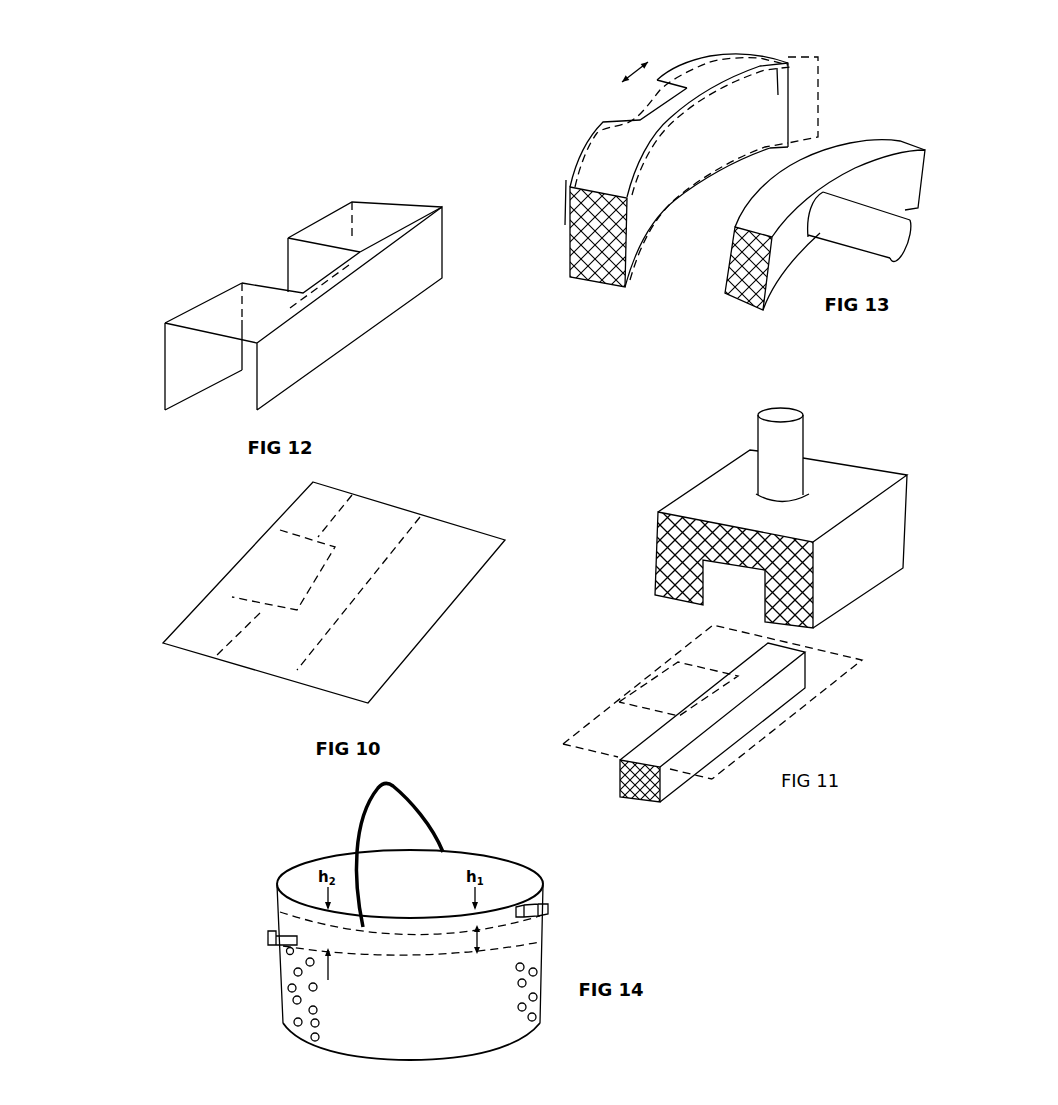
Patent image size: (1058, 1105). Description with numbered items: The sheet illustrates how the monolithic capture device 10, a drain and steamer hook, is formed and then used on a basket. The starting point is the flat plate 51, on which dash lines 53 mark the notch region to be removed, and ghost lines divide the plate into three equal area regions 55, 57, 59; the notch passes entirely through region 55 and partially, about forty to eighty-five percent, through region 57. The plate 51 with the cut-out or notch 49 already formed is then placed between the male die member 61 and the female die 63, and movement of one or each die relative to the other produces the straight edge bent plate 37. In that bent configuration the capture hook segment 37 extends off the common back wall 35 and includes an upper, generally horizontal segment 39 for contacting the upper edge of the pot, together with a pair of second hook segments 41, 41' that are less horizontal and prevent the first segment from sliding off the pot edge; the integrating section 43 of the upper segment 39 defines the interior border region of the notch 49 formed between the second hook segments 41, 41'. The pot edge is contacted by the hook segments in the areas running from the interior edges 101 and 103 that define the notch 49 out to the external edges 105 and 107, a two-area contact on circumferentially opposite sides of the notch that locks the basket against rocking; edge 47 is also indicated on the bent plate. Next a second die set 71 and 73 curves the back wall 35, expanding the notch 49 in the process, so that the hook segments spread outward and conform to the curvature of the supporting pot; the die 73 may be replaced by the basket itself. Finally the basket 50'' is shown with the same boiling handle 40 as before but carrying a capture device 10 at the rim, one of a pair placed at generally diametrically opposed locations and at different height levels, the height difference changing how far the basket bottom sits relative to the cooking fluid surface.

In FIG. 13, the capture device 10 is at (727, 65).
In FIG. 14, the capture device 10 is at (543, 908).
In FIG. 12, the back wall 35 is at (360, 327).
In FIG. 13, the back wall 35 is at (787, 62).
In FIG. 12, the capture hook segment 37 is at (388, 220).
In FIG. 13, the capture hook segment 37 is at (598, 128).
In FIG. 12, the upper segment 39 is at (235, 320).
In FIG. 13, the upper segment 39 is at (563, 172).
In FIG. 12, the second hook segment 41 is at (109, 398).
In FIG. 11, the second hook segment 41 is at (742, 702).
In FIG. 12, the second hook segment 41' is at (321, 173).
In FIG. 12, the integrating section 43 is at (380, 252).
In FIG. 13, the integrating section 43 is at (680, 100).
In FIG. 12, the edge of notch 47 is at (288, 278).
In FIG. 12, the notch 49 is at (283, 280).
In FIG. 13, the notch 49 is at (638, 108).
In FIG. 11, the notch 49 is at (664, 685).
In FIG. 10, the flat plate 51 is at (455, 523).
In FIG. 10, the dash lines 53 is at (235, 598).
In FIG. 10, the equal area region 55 is at (195, 645).
In FIG. 10, the equal area region 57 is at (272, 657).
In FIG. 10, the equal area region 59 is at (365, 683).
In FIG. 11, the male die member 61 is at (670, 787).
In FIG. 11, the female die 63 is at (843, 470).
In FIG. 13, the second die set member 71 is at (587, 277).
In FIG. 13, the second die set member 73 is at (727, 293).
In FIG. 12, the interior edge 101 is at (243, 280).
In FIG. 12, the interior edge 103 is at (285, 257).
In FIG. 12, the external edge 105 is at (365, 202).
In FIG. 13, the external edge 105 is at (703, 57).
In FIG. 12, the external edge 107 is at (182, 355).
In FIG. 14, the boiling handle 40 is at (440, 820).
In FIG. 14, the basket 50'' is at (460, 955).